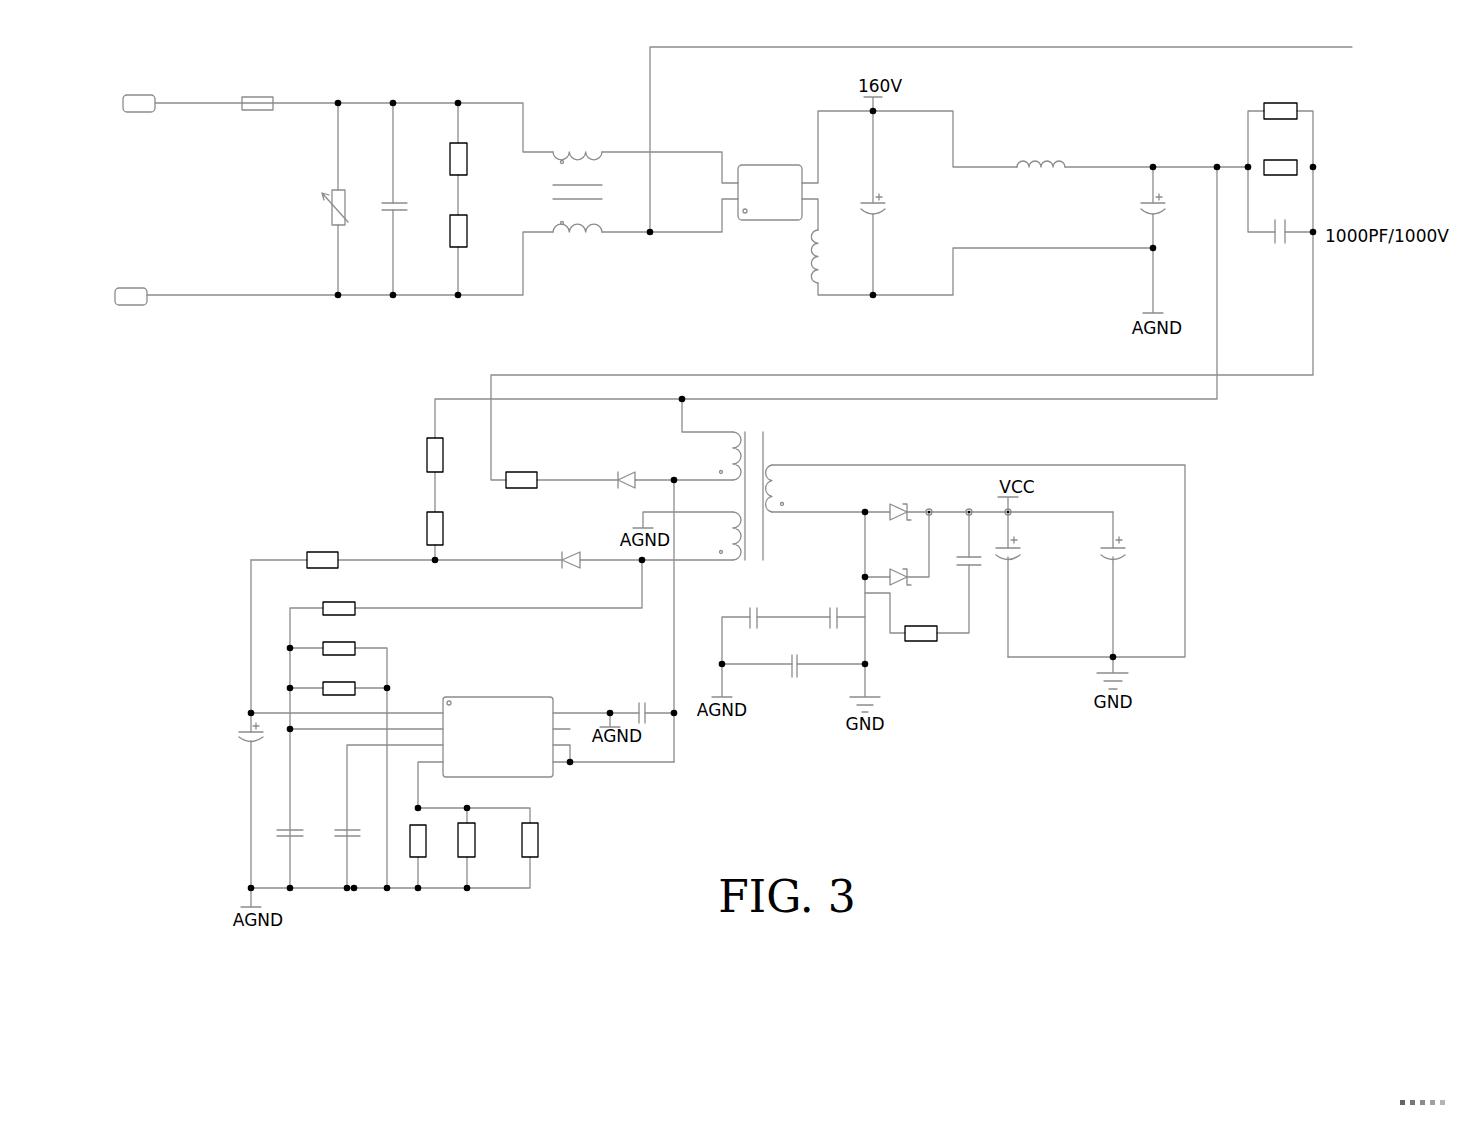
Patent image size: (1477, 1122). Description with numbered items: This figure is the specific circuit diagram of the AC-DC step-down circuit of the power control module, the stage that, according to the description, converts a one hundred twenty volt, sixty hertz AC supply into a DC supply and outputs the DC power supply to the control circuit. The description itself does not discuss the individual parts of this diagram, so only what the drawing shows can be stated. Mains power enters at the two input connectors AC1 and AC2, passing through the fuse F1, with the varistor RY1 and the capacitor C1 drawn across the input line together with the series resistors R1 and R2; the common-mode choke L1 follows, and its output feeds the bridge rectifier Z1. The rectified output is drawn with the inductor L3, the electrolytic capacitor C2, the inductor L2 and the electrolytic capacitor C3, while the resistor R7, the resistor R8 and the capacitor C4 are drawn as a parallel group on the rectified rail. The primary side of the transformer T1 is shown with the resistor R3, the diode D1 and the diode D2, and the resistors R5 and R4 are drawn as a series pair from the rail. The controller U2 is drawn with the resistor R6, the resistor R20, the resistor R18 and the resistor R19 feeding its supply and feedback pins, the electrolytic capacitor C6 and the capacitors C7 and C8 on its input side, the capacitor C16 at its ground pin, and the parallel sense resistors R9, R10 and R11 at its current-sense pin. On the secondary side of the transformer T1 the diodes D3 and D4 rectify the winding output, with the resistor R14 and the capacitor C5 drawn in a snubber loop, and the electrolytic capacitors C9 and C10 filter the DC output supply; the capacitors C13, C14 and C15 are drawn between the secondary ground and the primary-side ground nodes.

The AC input connector N AC1 is at (144, 87).
The AC input connector L AC2 is at (142, 280).
The fuse 250V/2A F1 is at (257, 86).
The varistor 10D471K RY1 is at (297, 206).
The capacitor 220nF C1 is at (416, 229).
The resistor 1M R1 is at (474, 165).
The resistor 1M R2 is at (474, 236).
The common mode choke 25mH L1 is at (580, 209).
The bridge rectifier MB10F Z1 is at (771, 170).
The inductor 200 ohm L3 is at (844, 256).
The electrolytic capacitor 33uF C2 is at (898, 215).
The inductor 1mH L2 is at (1045, 146).
The electrolytic capacitor 10uF C3 is at (1177, 215).
The resistor NC R7 is at (1280, 151).
The resistor 224 R8 is at (1281, 94).
The capacitor 1000PF/1000V C4 is at (1283, 215).
The resistor 1M R5 is at (449, 461).
The resistor 1M R4 is at (449, 535).
The resistor 100 R3 is at (523, 463).
The diode M7 D1 is at (629, 463).
The transformer EF-20 T1 is at (756, 472).
The diode SS4007 D2 is at (577, 542).
The resistor R6 is at (322, 549).
The resistor R20 is at (340, 598).
The resistor R18 is at (340, 638).
The resistor R19 is at (340, 678).
The electrolytic capacitor 10uF C6 is at (241, 736).
The capacitor C7 is at (302, 835).
The capacitor C8 is at (360, 835).
The controller IC U6773S U2 is at (503, 722).
The capacitor 1nF C16 is at (650, 695).
The resistor 2R4 R9 is at (438, 849).
The resistor 2R7 R10 is at (487, 848).
The resistor NC R11 is at (550, 847).
The schottky diode SS54-F D3 is at (919, 491).
The schottky diode SS54-F D4 is at (896, 556).
The resistor 470 R14 is at (925, 614).
The capacitor C5 is at (970, 586).
The electrolytic capacitor 1000uF C9 is at (1043, 559).
The electrolytic capacitor 1000uF C10 is at (1148, 559).
The capacitor 0.1u C13 is at (760, 599).
The capacitor 0.1u C14 is at (843, 599).
The capacitor 0.1u C15 is at (803, 647).